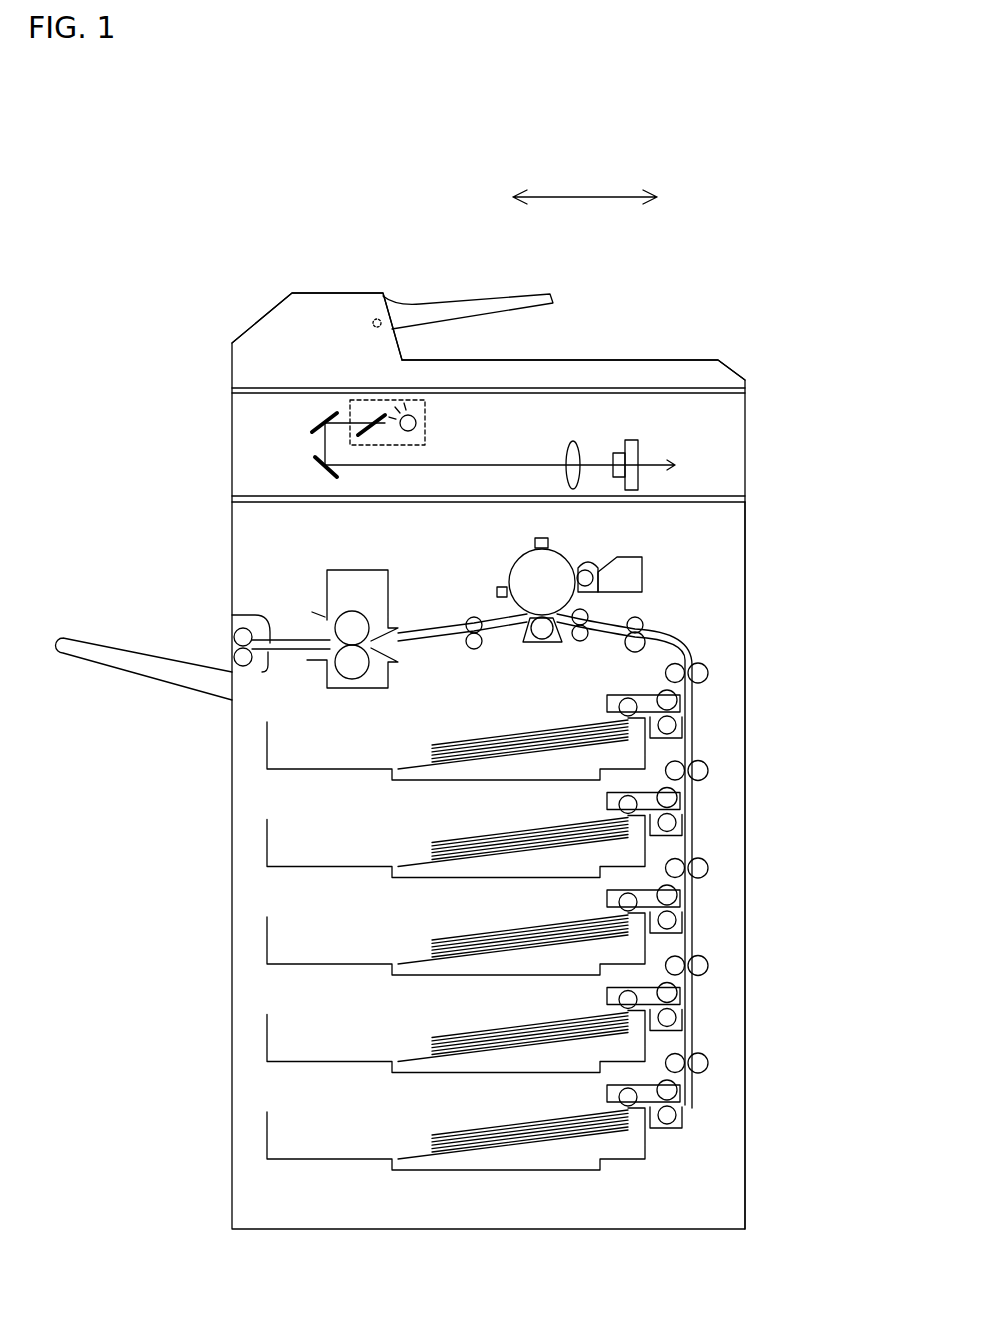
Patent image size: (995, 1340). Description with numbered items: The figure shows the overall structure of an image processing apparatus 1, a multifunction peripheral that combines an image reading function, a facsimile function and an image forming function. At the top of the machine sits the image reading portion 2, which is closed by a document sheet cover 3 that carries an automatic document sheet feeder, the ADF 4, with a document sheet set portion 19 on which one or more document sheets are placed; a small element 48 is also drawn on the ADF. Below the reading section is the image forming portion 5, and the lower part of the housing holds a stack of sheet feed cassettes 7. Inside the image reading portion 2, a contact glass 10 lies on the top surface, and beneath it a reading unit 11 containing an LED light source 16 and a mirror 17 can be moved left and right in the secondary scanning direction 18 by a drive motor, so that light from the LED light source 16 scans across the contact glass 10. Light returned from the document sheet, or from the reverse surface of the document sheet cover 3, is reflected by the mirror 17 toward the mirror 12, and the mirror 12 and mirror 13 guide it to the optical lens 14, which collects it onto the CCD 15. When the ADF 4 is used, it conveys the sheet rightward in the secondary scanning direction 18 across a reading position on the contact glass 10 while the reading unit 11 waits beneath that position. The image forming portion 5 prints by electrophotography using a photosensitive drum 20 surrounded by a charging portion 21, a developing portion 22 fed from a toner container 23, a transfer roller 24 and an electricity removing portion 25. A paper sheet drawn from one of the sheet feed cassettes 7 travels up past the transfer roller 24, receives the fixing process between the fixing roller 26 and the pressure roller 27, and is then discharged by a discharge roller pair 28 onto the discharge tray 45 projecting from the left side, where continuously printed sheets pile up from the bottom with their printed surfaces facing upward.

The image processing apparatus 1 is at (755, 243).
The image reading portion 2 is at (745, 437).
The document sheet cover 3 is at (722, 358).
The automatic document sheet feeder 4 is at (315, 293).
The image forming portion 5 is at (745, 578).
The sheet feed cassette 7 is at (408, 782).
The contact glass 10 is at (677, 388).
The reading unit 11 is at (425, 415).
The mirror 12 is at (312, 428).
The mirror 13 is at (313, 462).
The optical lens 14 is at (566, 445).
The CCD 15 is at (626, 445).
The LED light source 16 is at (416, 428).
The mirror 17 is at (370, 425).
The secondary scanning direction 18 is at (590, 197).
The document sheet set portion 19 is at (460, 297).
The photosensitive drum 20 is at (515, 560).
The charging portion 21 is at (548, 540).
The developing portion 22 is at (590, 565).
The toner container 23 is at (643, 578).
The transfer roller 24 is at (537, 650).
The electricity removing portion 25 is at (495, 588).
The fixing roller 26 is at (340, 612).
The pressure roller 27 is at (338, 683).
The discharge roller pair 28 is at (232, 615).
The discharge tray 45 is at (160, 680).
The document sensor 48 is at (372, 318).